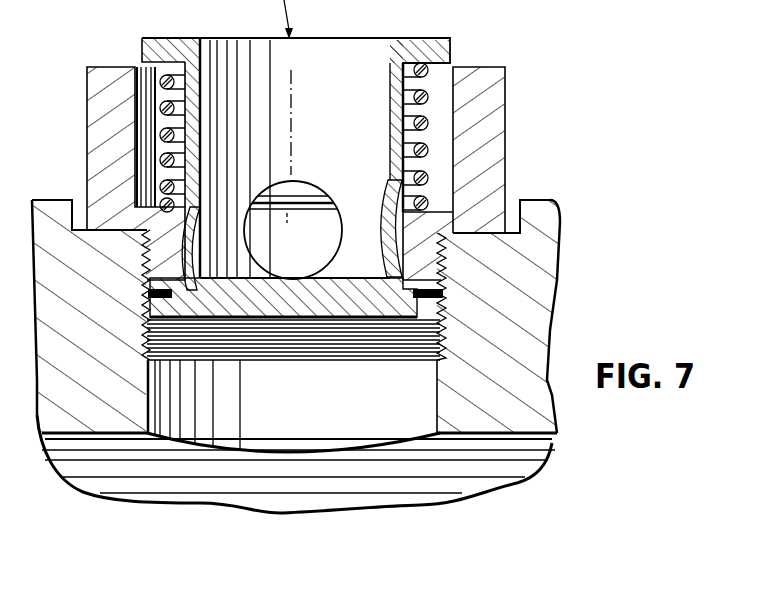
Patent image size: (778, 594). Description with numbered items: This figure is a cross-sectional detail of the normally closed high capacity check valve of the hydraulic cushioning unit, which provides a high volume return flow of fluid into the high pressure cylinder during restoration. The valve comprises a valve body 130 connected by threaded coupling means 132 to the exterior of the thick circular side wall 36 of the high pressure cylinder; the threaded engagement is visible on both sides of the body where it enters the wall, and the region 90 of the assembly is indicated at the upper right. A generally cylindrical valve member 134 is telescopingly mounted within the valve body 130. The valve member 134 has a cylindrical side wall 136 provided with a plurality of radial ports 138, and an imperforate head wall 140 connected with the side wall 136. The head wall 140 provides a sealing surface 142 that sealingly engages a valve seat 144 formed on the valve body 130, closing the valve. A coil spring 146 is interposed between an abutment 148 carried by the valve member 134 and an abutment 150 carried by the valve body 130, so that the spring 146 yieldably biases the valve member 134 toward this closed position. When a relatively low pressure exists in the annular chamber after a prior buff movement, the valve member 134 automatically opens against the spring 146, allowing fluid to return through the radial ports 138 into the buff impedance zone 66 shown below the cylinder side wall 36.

The circular side wall 36 is at (555, 290).
The buff impedance zone 66 is at (387, 488).
The valve assembly 90 is at (667, 0).
The valve body 130 is at (497, 143).
The threaded coupling means 132 is at (447, 258).
The valve member 134 is at (410, 38).
The cylindrical side wall 136 is at (200, 64).
The radial ports 138 is at (307, 182).
The imperforate head wall 140 is at (340, 300).
The sealing surface 142 is at (219, 320).
The valve seat 144 is at (140, 296).
The coil spring 146 is at (432, 90).
The valve member carried abutment 148 is at (163, 56).
The valve body carried abutment 150 is at (147, 195).